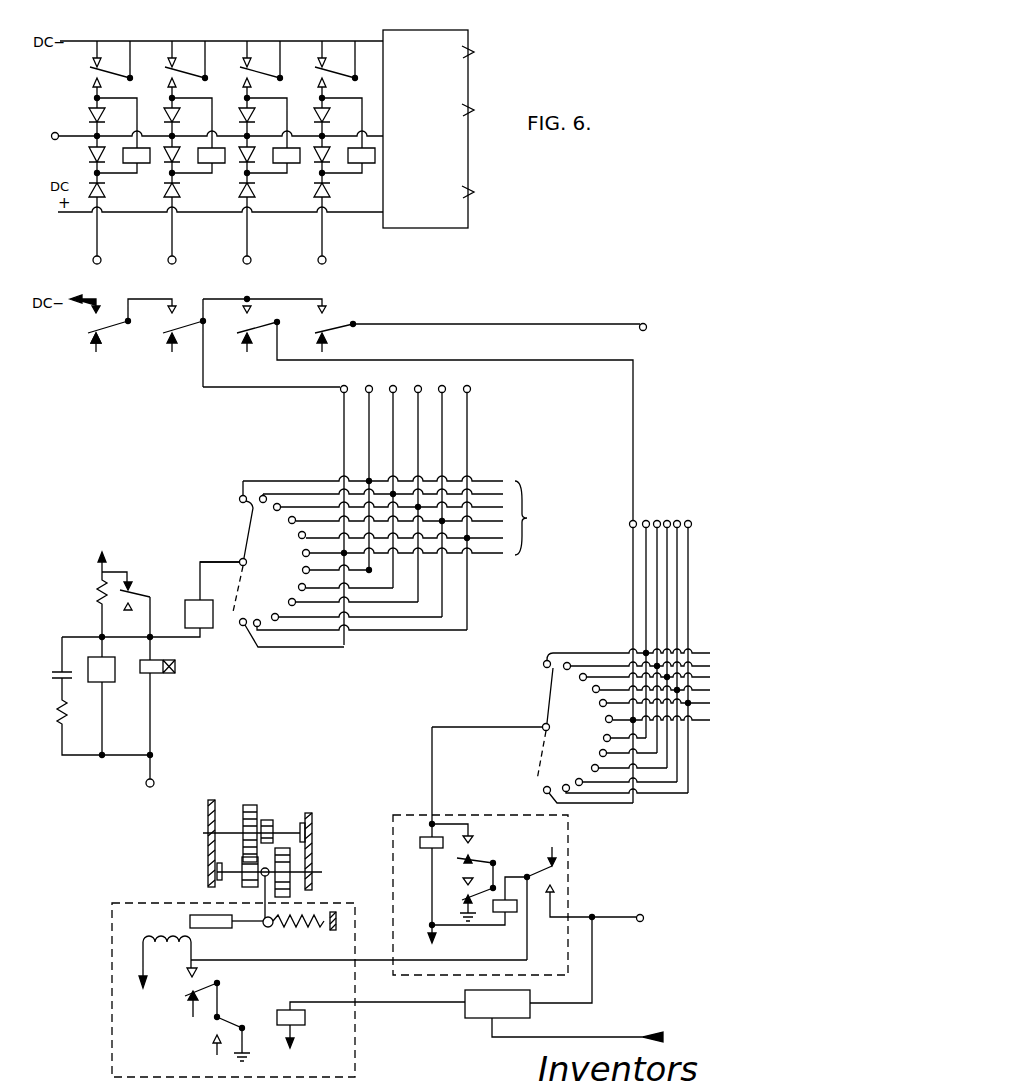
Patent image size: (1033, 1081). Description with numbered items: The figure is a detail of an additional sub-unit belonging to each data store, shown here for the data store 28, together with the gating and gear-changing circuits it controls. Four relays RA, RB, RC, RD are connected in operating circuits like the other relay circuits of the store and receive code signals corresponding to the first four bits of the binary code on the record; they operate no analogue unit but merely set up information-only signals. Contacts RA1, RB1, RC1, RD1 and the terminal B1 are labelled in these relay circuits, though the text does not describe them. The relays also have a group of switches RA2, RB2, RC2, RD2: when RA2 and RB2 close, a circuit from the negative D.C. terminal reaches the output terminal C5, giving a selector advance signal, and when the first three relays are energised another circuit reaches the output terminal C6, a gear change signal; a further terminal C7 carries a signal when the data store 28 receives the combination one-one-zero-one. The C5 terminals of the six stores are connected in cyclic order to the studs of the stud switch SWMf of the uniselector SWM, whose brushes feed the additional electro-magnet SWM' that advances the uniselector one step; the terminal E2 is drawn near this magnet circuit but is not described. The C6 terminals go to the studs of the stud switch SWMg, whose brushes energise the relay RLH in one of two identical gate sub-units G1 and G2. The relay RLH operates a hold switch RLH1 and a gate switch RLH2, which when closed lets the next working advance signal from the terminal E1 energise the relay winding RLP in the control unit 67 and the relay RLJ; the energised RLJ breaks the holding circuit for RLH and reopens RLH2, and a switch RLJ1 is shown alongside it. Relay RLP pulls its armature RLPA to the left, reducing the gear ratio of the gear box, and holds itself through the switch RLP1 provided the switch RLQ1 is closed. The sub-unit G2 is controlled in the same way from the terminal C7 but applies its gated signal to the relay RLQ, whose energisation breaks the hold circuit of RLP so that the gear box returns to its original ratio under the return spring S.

The data store 28 is at (428, 129).
The control unit 67 is at (112, 953).
The B1 terminal B1 is at (205, 136).
The relay contact RA1 is at (115, 60).
The relay contact RB1 is at (190, 60).
The relay contact RC1 is at (265, 60).
The relay contact RD1 is at (340, 60).
The relay RA is at (119, 180).
The relay RB is at (194, 180).
The relay RC is at (269, 180).
The relay RD is at (344, 180).
The switch RA2 is at (128, 337).
The switch RB2 is at (241, 342).
The switch RC2 is at (432, 421).
The switch RD2 is at (342, 327).
The terminal C7 is at (646, 320).
The output terminal C5 is at (339, 507).
The output terminal C6 is at (688, 528).
The stud switch SWMf is at (395, 544).
The electro-magnet SWM' is at (341, 611).
The uniselector SWM is at (146, 655).
The stud switch SWMg is at (571, 737).
The terminal E2 is at (149, 783).
The working advance terminal E1 is at (629, 919).
The return spring S is at (285, 928).
The relay winding RLP is at (150, 929).
The armature RLPA is at (226, 932).
The switch RLP1 is at (221, 999).
The switch RLQ1 is at (207, 1038).
The relay RLQ is at (371, 1037).
The gate sub-unit G1 is at (568, 840).
The gate sub-unit G2 is at (478, 997).
The relay RLH is at (420, 843).
The relay contact RLJ1 is at (473, 854).
The hold switch RLH1 is at (530, 838).
The relay RLJ is at (600, 945).
The gate switch RLH2 is at (568, 870).